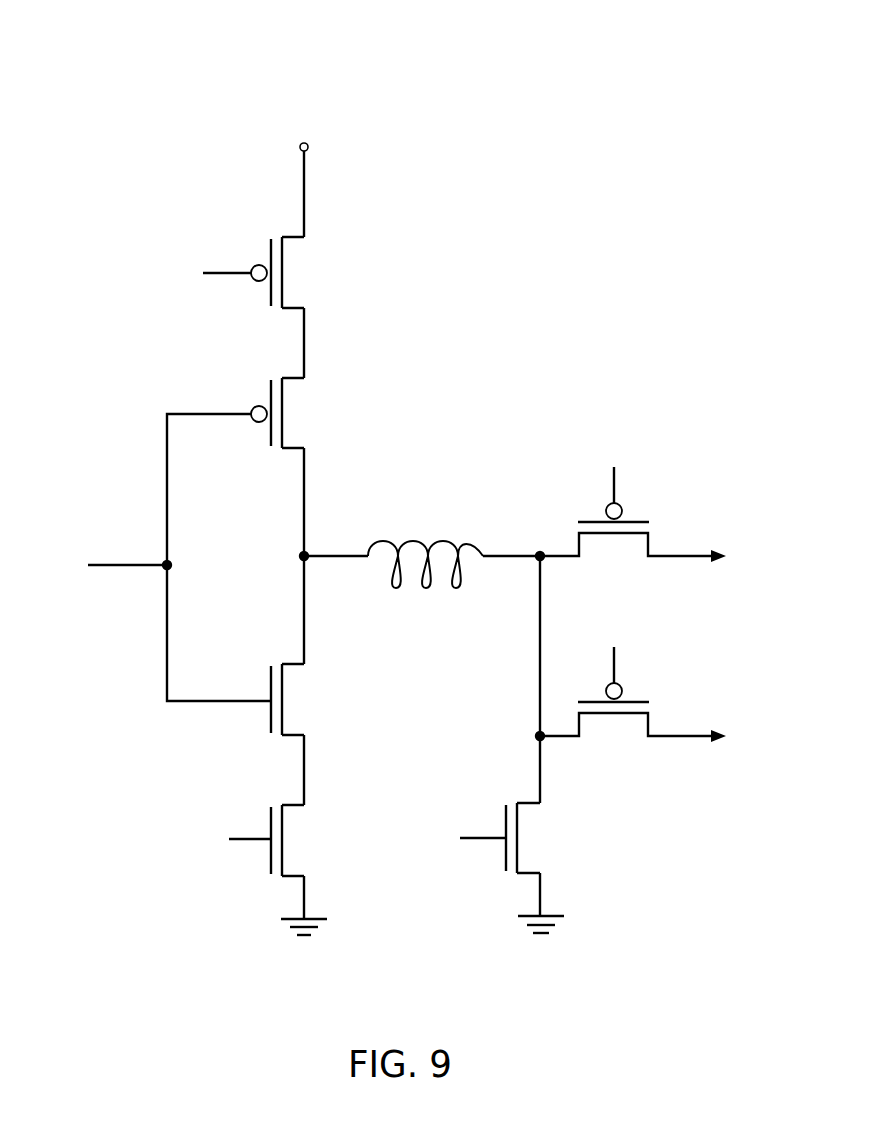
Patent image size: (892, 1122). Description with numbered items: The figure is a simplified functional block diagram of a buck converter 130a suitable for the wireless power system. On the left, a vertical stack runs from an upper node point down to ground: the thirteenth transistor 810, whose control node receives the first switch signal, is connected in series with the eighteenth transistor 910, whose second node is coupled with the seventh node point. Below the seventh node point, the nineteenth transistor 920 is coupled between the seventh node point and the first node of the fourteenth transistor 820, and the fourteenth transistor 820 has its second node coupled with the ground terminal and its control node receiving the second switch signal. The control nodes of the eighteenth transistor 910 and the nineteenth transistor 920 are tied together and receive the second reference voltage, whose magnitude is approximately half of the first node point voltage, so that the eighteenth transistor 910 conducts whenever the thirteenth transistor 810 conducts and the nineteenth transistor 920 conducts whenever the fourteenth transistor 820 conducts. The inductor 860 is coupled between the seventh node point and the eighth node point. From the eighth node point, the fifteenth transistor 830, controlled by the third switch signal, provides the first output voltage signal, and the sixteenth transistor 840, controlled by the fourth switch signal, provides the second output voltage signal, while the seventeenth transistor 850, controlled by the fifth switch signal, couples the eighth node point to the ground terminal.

The buck converter 130a is at (80, 48).
The thirteenth transistor 810 is at (283, 271).
The eighteenth transistor 910 is at (283, 410).
The nineteenth transistor 920 is at (283, 700).
The fourteenth transistor 820 is at (283, 838).
The inductor 860 is at (415, 548).
The fifteenth transistor 830 is at (608, 533).
The sixteenth transistor 840 is at (608, 713).
The seventeenth transistor 850 is at (518, 837).